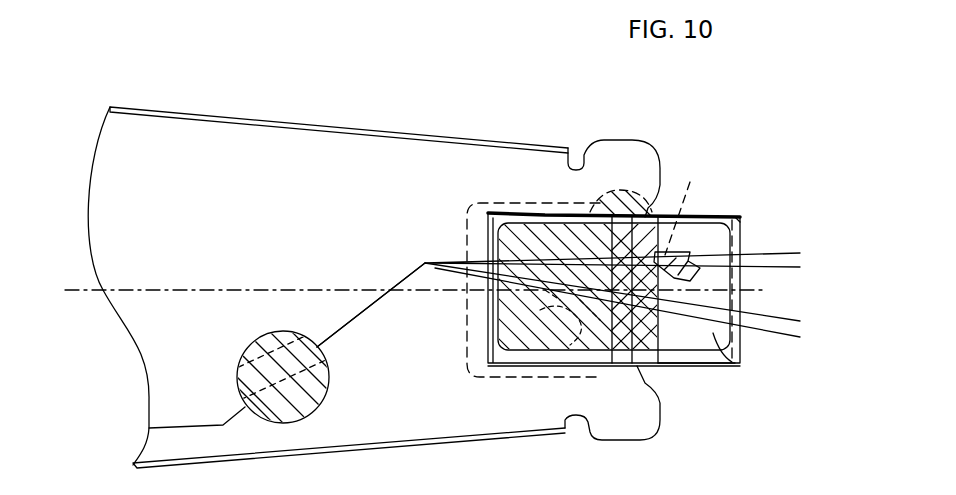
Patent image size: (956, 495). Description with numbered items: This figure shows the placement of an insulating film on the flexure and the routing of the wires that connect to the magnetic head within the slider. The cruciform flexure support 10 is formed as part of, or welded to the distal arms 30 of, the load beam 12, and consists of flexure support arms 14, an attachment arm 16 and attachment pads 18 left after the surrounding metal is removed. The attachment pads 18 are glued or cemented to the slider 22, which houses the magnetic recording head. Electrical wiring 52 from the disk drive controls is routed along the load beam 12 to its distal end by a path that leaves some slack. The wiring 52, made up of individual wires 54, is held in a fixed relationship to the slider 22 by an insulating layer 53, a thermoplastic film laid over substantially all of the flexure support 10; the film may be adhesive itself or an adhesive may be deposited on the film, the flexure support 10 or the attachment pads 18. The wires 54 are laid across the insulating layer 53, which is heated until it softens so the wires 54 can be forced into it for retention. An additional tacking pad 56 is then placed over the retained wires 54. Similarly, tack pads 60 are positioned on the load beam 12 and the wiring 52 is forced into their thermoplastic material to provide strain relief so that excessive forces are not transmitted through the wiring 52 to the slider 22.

The flexure support 10 is at (691, 206).
The load beam 12 is at (337, 153).
The flexure support arms 14 is at (688, 370).
The attachment arm 16 is at (547, 383).
The attachment pads 18 is at (507, 307).
The slider 22 is at (710, 215).
The distal arms 30 is at (620, 155).
The electrical wiring 52 is at (335, 338).
The insulating layer 53 is at (648, 213).
The wires 54 is at (752, 263).
The tacking pad 56 is at (742, 215).
The tack pads 60 is at (317, 413).